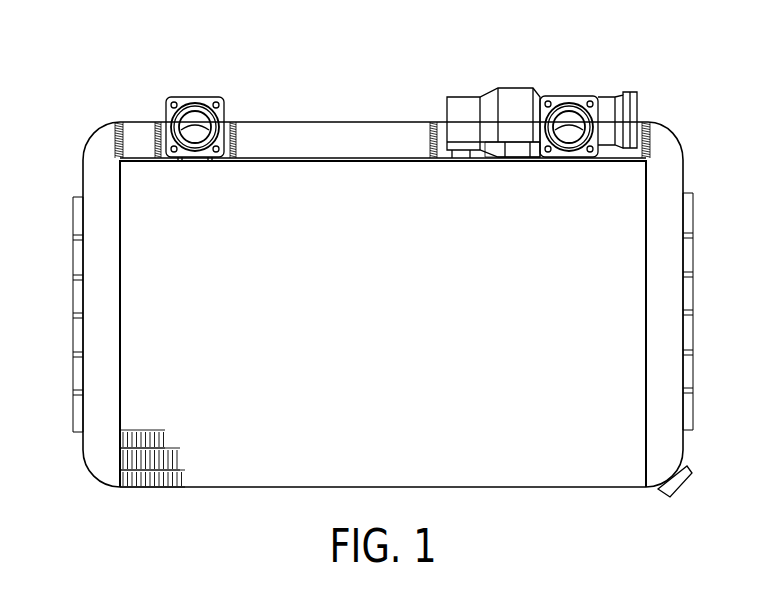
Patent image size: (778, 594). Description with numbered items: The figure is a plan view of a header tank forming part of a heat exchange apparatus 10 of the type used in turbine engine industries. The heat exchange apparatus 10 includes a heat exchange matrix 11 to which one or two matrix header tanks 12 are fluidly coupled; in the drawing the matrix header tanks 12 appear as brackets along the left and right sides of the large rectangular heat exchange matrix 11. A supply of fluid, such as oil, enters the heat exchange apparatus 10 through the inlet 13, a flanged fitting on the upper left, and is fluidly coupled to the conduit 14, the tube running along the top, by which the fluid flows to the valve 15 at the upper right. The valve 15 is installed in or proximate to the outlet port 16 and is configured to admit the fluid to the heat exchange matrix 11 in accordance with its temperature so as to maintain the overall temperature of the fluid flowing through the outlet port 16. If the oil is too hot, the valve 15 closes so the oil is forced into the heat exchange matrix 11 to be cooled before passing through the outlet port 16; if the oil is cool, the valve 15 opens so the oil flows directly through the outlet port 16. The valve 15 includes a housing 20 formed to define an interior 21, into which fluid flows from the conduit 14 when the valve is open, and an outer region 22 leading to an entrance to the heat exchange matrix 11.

The heat exchange apparatus 10 is at (352, 130).
The heat exchange matrix 11 is at (377, 330).
The matrix header tanks 12 is at (89, 446).
The inlet 13 is at (195, 97).
The conduit 14 is at (272, 135).
The valve 15 is at (605, 106).
The outlet port 16 is at (569, 97).
The housing 20 is at (512, 93).
The interior 21 is at (506, 131).
The outer region 22 is at (515, 152).